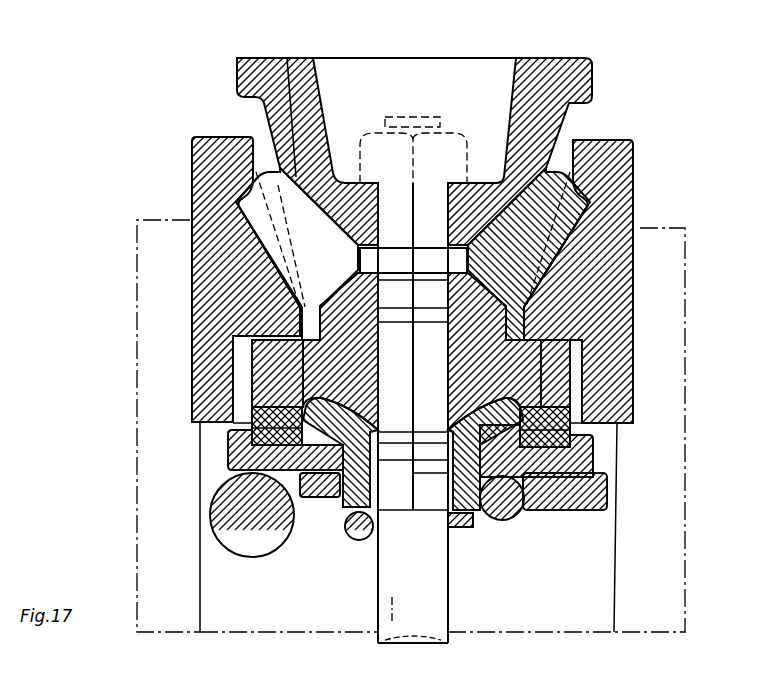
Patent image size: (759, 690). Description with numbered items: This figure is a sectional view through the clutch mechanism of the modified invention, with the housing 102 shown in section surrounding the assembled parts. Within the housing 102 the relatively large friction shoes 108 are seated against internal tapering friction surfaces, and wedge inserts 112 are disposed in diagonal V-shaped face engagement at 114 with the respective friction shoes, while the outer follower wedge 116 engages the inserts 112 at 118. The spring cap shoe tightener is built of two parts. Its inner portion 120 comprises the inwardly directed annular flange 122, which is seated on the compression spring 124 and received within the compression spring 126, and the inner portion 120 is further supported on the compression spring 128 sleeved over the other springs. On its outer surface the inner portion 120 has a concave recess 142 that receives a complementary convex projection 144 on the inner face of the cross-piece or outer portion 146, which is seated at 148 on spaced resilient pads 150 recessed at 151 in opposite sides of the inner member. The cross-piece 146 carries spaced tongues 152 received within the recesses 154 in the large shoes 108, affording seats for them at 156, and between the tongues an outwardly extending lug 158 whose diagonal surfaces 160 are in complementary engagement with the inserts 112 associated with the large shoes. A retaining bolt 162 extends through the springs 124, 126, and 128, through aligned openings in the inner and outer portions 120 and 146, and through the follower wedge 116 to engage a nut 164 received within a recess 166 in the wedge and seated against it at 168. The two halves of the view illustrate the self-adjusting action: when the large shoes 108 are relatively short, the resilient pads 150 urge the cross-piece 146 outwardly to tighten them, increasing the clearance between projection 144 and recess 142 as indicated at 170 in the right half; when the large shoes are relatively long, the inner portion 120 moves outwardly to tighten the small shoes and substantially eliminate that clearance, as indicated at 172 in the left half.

The housing 102 is at (137, 220).
The large friction shoes 108 is at (206, 137).
The wedge inserts 112 is at (322, 247).
The diagonal V-shaped face engagement 114 is at (240, 233).
The outer follower wedge 116 is at (590, 62).
The engagement of follower wedge with inserts 118 is at (290, 58).
The inner portion of spring cap shoe tightener 120 is at (240, 442).
The inwardly directed annular flange 122 is at (355, 493).
The compression spring 124 is at (358, 540).
The compression spring 126 is at (507, 513).
The compression spring 128 is at (222, 527).
The concave recess 142 is at (605, 427).
The convex projection 144 is at (306, 405).
The cross-piece or outer portion of spring cap shoe tightener 146 is at (545, 336).
The seat of cross-piece on resilient pads 148 is at (300, 424).
The resilient pads 150 is at (290, 445).
The recesses for resilient pads 151 is at (320, 447).
The tongues 152 is at (245, 380).
The recesses in large shoes 154 is at (237, 343).
The seat for large shoes 156 is at (270, 337).
The outwardly extending lug or projection 158 is at (477, 345).
The diagonal surfaces 160 is at (337, 288).
The retaining bolt 162 is at (413, 428).
The nut 164 is at (362, 183).
The recess in follower wedge 166 is at (500, 137).
The seat of nut 168 is at (378, 183).
The clearance between projection and recess 170 is at (465, 527).
The substantially eliminated clearance 172 is at (350, 462).